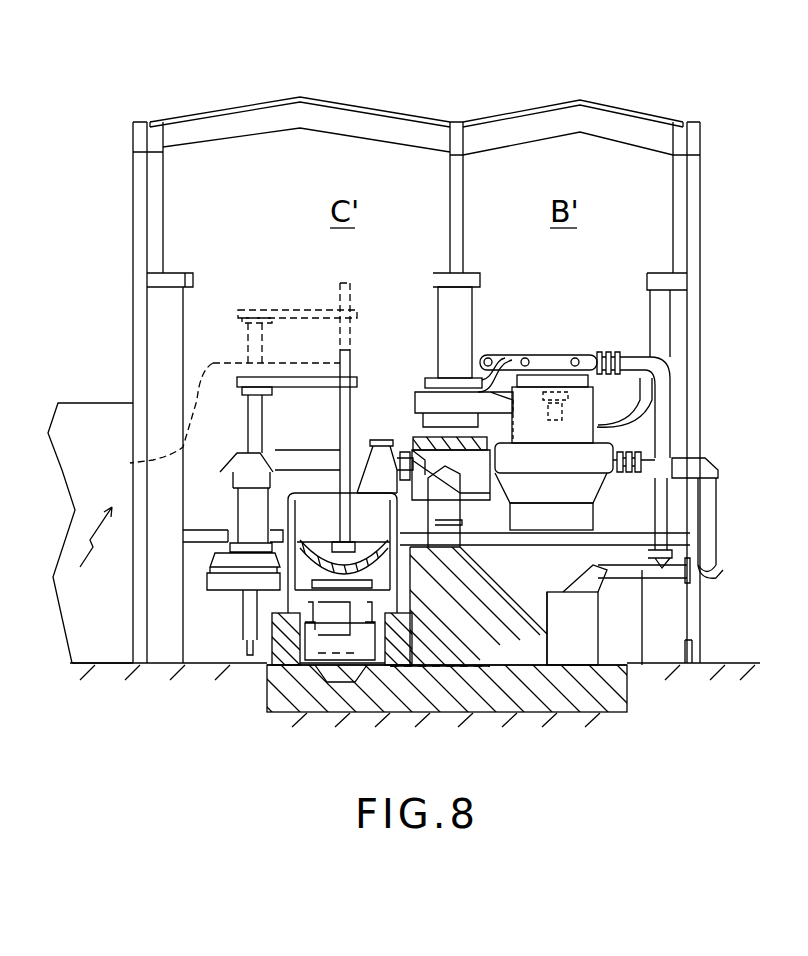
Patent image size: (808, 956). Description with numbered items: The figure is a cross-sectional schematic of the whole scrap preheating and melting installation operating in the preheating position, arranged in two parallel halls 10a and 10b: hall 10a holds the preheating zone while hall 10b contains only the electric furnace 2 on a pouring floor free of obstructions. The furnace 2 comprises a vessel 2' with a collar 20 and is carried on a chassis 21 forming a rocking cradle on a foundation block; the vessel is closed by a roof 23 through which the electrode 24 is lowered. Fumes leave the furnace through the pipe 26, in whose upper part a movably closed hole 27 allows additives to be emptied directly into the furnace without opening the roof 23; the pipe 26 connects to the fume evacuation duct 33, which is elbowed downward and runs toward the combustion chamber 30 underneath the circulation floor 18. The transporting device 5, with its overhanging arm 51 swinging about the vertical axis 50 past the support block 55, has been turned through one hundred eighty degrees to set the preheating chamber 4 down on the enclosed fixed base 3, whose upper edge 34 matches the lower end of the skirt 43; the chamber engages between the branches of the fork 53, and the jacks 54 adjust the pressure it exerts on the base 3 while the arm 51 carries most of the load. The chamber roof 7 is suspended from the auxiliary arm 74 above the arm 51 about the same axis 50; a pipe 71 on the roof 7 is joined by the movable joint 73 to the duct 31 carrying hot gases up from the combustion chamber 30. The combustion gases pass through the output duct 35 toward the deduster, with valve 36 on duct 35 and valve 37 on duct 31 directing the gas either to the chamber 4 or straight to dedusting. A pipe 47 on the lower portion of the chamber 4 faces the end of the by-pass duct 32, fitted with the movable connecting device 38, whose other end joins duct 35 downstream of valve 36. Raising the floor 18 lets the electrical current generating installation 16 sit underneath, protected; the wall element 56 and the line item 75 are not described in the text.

The hall 10a is at (593, 153).
The hall 10b is at (338, 150).
The electrical current generating installation 16 is at (100, 417).
The electric furnace 2 is at (266, 472).
The vessel 2' is at (241, 607).
The collar 20 is at (303, 518).
The chassis 21 is at (283, 603).
The roof 23 is at (350, 467).
The electrode 24 is at (340, 360).
The pipe 26 is at (303, 492).
The hole 27 is at (380, 437).
The fume evacuation duct 33 is at (430, 443).
The support block 55 is at (430, 437).
The transporting device 5 is at (410, 369).
The vertical axis 50 is at (447, 367).
The overhanging arm 51 is at (490, 395).
The auxiliary arm 74 is at (510, 360).
The conduit 75 is at (528, 380).
The pipe 71 is at (580, 380).
The roof 7 is at (557, 377).
The movable joint 73 is at (602, 355).
The jacks 54 is at (633, 357).
The duct 31 is at (650, 357).
The preheating chamber 4 is at (641, 409).
The fork 53 is at (660, 385).
The skirt 43 is at (631, 444).
The by-pass duct 32 is at (688, 462).
The valve 37 is at (667, 533).
The valve 36 is at (700, 580).
The output duct 35 is at (670, 577).
The movable connecting device 38 is at (633, 472).
The pipe 47 is at (610, 462).
The upper edge 34 is at (567, 503).
The fixed base 3 is at (583, 519).
The circulation floor 18 is at (610, 542).
The chute 56 is at (477, 513).
The combustion chamber 30 is at (563, 660).